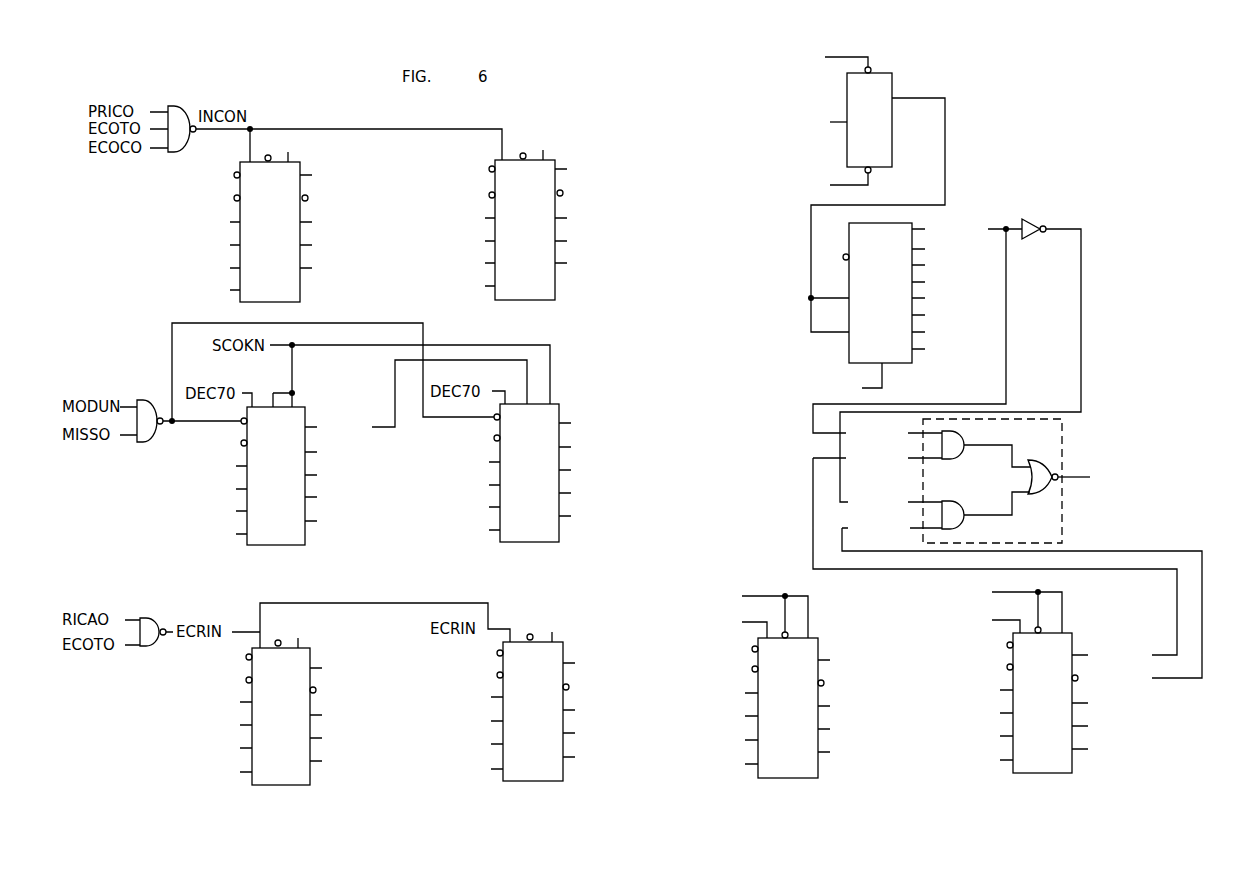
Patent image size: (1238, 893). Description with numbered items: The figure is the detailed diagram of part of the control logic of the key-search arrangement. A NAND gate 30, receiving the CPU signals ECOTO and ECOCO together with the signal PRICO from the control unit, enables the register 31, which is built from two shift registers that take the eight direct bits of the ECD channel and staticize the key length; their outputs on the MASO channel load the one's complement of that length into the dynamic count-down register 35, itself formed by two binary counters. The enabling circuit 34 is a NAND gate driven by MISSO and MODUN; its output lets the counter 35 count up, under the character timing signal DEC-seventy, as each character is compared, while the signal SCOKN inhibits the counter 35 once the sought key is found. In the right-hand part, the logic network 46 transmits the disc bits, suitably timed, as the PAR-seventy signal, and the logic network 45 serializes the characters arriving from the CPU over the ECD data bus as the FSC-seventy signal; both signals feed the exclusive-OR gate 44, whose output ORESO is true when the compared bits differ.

The NAND gate 30 is at (189, 114).
The register 31 is at (128, 262).
The enabling circuit 34 is at (143, 400).
The dynamic count-down register 35 is at (138, 527).
The exclusive-OR gate 44 is at (1065, 530).
The logic network 45 is at (430, 792).
The logic network 46 is at (963, 82).